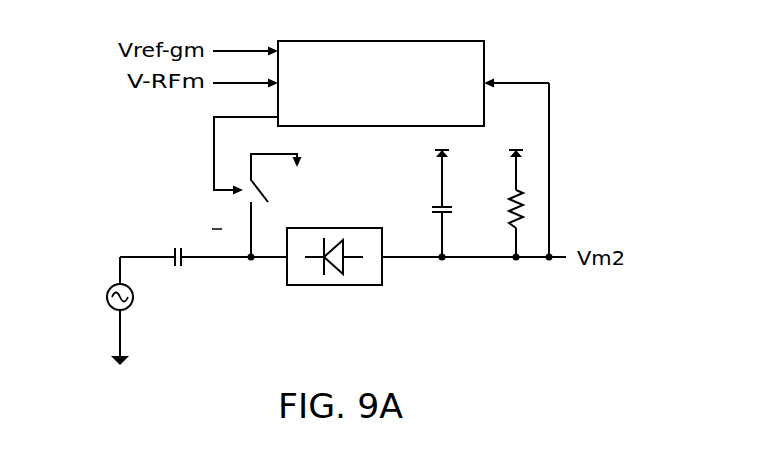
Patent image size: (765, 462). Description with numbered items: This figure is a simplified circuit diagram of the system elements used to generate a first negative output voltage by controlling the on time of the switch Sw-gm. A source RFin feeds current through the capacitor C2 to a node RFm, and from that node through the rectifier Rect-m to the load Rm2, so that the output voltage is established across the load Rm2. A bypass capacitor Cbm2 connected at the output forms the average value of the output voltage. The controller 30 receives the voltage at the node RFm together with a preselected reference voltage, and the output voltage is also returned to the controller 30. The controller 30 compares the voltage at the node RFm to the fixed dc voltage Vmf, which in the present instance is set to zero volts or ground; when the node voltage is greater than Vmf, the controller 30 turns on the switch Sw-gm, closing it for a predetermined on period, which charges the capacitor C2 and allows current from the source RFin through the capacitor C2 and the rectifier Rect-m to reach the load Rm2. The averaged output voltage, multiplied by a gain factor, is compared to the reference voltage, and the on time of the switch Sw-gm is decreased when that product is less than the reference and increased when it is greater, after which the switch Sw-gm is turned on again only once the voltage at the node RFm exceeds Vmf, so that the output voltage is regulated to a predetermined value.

The controller 30 is at (453, 79).
The switch Sw-gm is at (258, 190).
The fixed dc voltage Vmf is at (288, 144).
The capacitor C2 is at (177, 266).
The source RFin is at (85, 311).
The RF node RFm is at (244, 272).
The rectifier Rect-m is at (313, 285).
The bypass capacitor Cbm2 is at (438, 203).
The load Rm2 is at (508, 207).